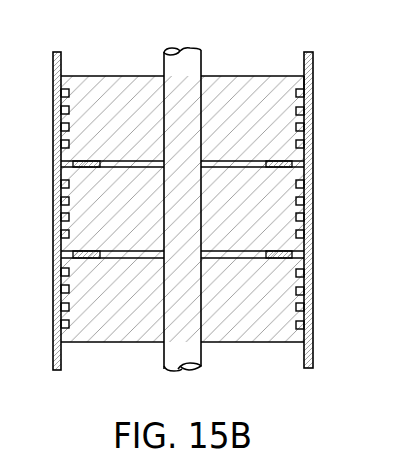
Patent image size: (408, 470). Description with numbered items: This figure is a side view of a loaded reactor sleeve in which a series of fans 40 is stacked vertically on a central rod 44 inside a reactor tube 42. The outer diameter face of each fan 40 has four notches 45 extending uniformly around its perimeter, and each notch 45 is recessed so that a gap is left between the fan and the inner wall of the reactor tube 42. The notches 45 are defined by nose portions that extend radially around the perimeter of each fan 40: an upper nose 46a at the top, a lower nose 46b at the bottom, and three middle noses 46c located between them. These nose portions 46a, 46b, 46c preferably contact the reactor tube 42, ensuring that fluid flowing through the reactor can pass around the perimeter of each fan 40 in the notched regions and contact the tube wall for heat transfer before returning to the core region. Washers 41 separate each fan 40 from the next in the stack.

The fan 40 is at (118, 82).
The washer 41 is at (89, 250).
The reactor tube 42 is at (313, 66).
The central rod 44 is at (184, 51).
The notch 45 is at (62, 93).
The upper nose 46a is at (306, 87).
The lower nose 46b is at (302, 155).
The middle nose 46c is at (301, 118).